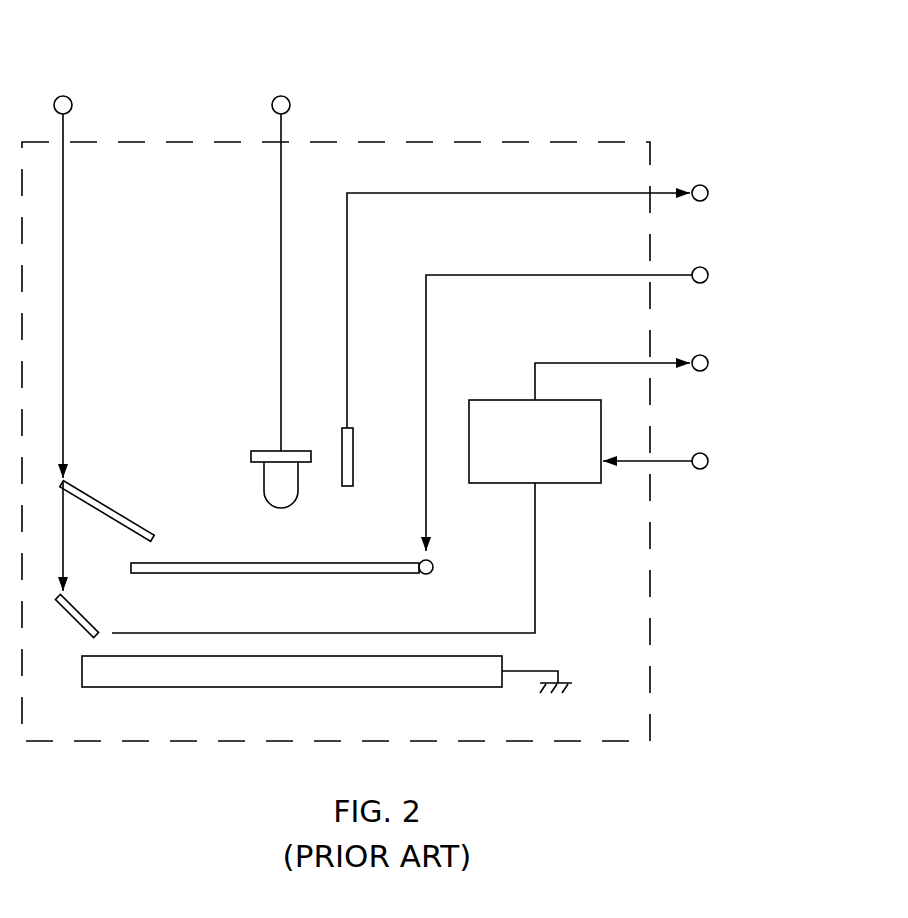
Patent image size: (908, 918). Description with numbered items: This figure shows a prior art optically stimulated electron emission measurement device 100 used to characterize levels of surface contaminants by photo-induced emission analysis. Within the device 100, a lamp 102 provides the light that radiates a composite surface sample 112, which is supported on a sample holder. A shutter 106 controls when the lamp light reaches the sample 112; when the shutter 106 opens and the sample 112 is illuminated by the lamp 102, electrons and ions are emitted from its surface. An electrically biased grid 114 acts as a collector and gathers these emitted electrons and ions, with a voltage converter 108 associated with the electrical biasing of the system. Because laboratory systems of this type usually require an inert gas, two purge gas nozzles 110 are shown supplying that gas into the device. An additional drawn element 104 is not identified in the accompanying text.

The prior art UV photoelectron spectroscopy system 100 is at (500, 82).
The UV lamp 102 is at (260, 450).
The UV intensity sensor 104 is at (355, 453).
The grid 106 is at (435, 545).
The voltage converter 108 is at (490, 400).
The mirror 110 is at (110, 507).
The sample stage 112 is at (289, 695).
The sample 114 is at (289, 620).